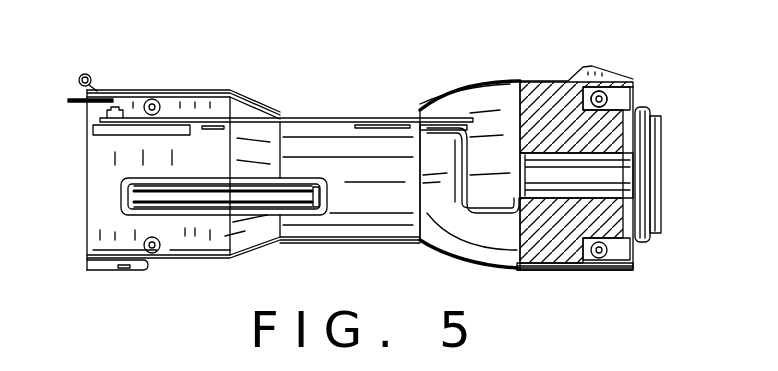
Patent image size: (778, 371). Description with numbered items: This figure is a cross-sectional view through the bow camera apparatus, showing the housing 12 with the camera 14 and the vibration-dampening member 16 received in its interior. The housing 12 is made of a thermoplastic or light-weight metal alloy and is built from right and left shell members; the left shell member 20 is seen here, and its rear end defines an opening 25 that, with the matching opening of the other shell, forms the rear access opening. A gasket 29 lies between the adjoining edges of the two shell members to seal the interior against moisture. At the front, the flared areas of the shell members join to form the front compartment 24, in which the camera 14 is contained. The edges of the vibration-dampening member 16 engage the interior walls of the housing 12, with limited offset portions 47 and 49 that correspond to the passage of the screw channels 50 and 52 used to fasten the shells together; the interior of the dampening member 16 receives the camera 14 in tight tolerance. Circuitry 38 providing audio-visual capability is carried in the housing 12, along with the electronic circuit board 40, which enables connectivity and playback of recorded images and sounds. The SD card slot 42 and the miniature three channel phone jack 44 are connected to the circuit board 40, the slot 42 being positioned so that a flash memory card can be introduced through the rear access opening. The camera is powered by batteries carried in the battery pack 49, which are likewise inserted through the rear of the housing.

The housing 12 is at (212, 68).
The camera 14 is at (633, 175).
The vibration-dampening member 16 is at (547, 200).
The left shell member 20 is at (87, 231).
The front compartment 24 is at (500, 100).
The opening 25 is at (107, 172).
The gasket 29 is at (343, 243).
The circuitry 38 is at (493, 222).
The electronic circuit board 40 is at (262, 122).
The SD card slot 42 is at (115, 132).
The miniature three channel phone jack 44 is at (117, 107).
The offset portion 47 is at (628, 107).
The battery pack 49 is at (207, 205).
The screw channel 50 is at (601, 91).
The screw channel 52 is at (607, 253).